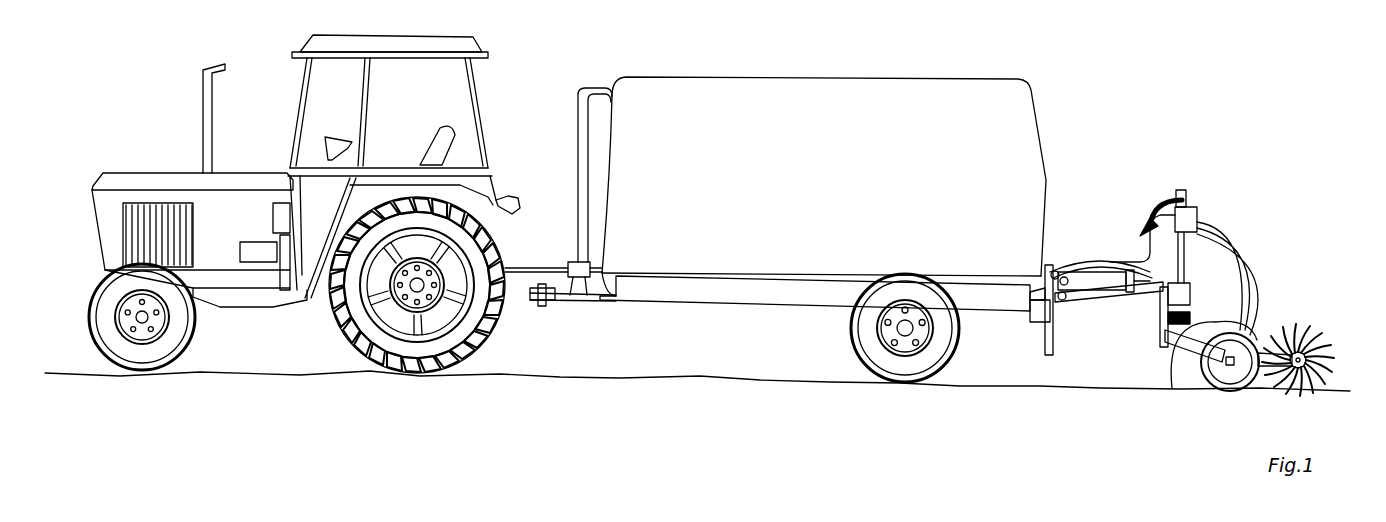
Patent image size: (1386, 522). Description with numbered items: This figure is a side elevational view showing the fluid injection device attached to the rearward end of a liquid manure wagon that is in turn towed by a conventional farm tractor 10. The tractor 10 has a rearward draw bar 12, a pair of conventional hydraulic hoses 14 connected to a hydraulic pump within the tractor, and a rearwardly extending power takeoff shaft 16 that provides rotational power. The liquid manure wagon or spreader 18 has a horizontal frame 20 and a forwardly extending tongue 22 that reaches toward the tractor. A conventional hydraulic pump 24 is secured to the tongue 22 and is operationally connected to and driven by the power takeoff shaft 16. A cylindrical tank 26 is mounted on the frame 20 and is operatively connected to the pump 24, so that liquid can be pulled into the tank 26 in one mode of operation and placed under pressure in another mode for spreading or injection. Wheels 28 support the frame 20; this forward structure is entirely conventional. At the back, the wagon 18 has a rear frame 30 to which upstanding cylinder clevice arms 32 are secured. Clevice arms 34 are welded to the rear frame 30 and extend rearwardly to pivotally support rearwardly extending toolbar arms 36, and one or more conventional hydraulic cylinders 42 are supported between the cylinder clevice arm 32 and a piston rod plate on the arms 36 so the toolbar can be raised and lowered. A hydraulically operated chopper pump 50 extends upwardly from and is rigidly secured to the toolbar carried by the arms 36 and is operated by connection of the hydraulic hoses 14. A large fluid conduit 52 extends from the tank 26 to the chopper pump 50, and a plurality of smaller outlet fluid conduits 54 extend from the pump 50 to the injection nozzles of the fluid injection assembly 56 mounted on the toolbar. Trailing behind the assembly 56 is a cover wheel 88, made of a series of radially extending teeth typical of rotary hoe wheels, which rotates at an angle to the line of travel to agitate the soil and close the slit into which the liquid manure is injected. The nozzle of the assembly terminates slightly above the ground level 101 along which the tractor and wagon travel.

The farm tractor 10 is at (148, 173).
The draw bar 12 is at (520, 304).
The hydraulic hoses 14 is at (512, 207).
The power takeoff shaft 16 is at (536, 266).
The liquid manure wagon 18 is at (823, 204).
The horizontal frame 20 is at (708, 302).
The tongue 22 is at (606, 298).
The hydraulic pump 24 is at (576, 280).
The cylindrical tank 26 is at (828, 90).
The wheels 28 is at (947, 330).
The rear frame 30 is at (1049, 346).
The cylinder clevice arms 32 is at (1055, 268).
The clevice arms 34 is at (1060, 305).
The toolbar arms 36 is at (1108, 300).
The hydraulic cylinders 42 is at (1088, 265).
The chopper pump 50 is at (1192, 215).
The fluid conduit 52 is at (1126, 247).
The outlet fluid conduits 54 is at (1232, 240).
The fluid injection assembly 56 is at (1260, 330).
The cover wheel 88 is at (1326, 330).
The ground level 101 is at (775, 385).